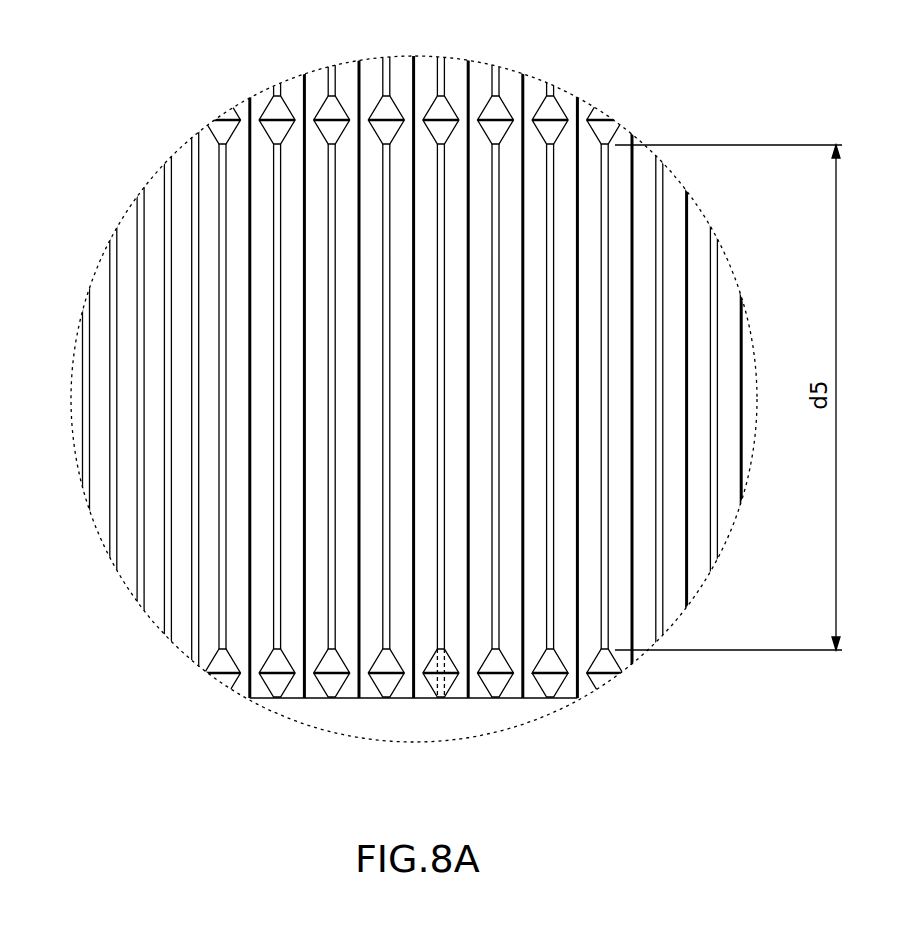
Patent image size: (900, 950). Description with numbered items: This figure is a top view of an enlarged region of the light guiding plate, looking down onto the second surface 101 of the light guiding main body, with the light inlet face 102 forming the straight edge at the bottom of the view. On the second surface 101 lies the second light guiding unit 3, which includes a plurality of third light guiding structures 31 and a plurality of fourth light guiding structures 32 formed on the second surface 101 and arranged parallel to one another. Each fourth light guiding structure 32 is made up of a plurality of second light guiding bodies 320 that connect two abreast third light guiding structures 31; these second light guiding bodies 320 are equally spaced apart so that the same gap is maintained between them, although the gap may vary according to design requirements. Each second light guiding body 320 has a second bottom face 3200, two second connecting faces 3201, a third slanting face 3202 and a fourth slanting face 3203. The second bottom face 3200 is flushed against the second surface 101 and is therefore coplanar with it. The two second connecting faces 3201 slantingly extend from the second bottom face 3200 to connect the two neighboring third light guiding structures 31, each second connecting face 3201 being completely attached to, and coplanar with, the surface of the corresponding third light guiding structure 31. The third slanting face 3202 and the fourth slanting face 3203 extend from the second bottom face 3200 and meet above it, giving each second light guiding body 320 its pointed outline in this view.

The second surface 101 is at (222, 566).
The light inlet face 102 is at (535, 700).
The second light guiding unit 3 is at (412, 429).
The third light guiding structures 31 is at (226, 624).
The fourth light guiding structures 32 is at (432, 429).
The second light guiding bodies 320 is at (426, 452).
The second bottom face 3200 is at (434, 728).
The second connecting faces 3201 is at (430, 683).
The third slanting face 3202 is at (549, 685).
The fourth slanting face 3203 is at (552, 663).